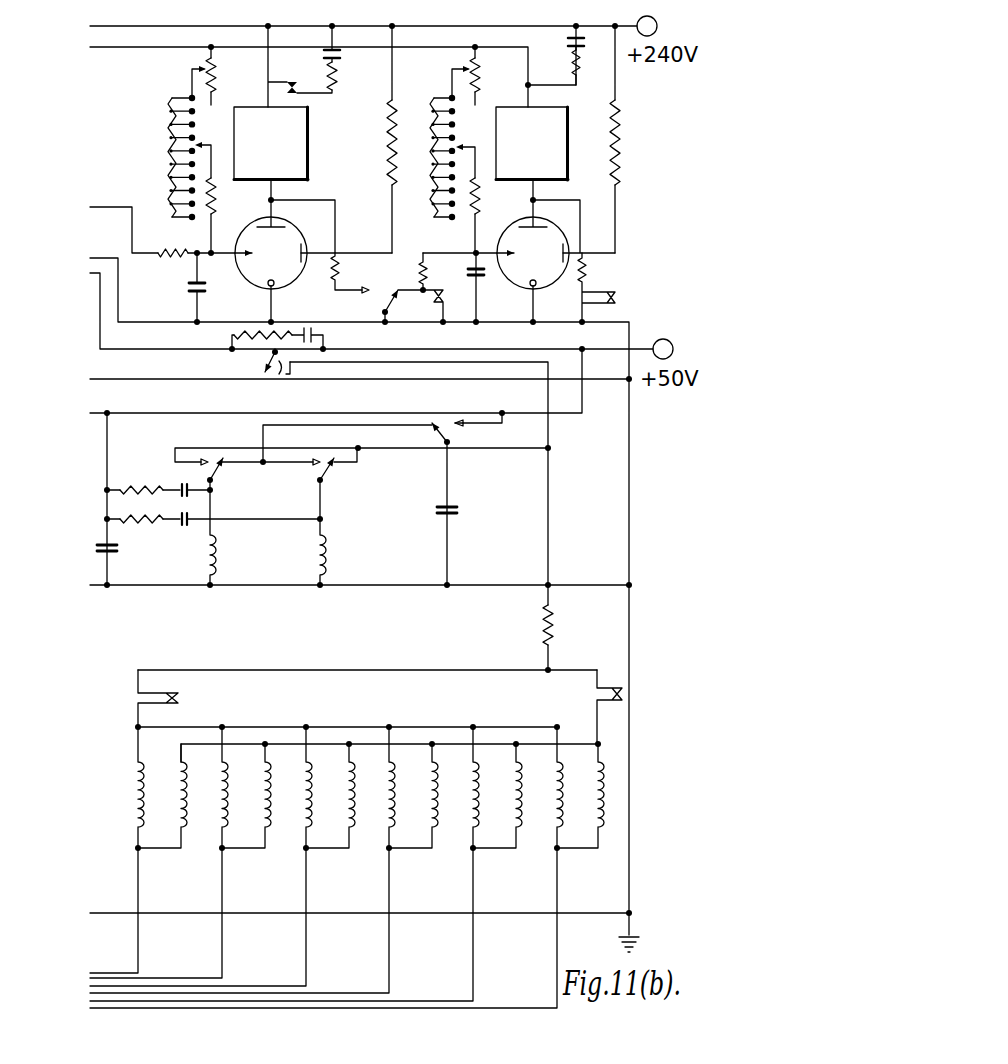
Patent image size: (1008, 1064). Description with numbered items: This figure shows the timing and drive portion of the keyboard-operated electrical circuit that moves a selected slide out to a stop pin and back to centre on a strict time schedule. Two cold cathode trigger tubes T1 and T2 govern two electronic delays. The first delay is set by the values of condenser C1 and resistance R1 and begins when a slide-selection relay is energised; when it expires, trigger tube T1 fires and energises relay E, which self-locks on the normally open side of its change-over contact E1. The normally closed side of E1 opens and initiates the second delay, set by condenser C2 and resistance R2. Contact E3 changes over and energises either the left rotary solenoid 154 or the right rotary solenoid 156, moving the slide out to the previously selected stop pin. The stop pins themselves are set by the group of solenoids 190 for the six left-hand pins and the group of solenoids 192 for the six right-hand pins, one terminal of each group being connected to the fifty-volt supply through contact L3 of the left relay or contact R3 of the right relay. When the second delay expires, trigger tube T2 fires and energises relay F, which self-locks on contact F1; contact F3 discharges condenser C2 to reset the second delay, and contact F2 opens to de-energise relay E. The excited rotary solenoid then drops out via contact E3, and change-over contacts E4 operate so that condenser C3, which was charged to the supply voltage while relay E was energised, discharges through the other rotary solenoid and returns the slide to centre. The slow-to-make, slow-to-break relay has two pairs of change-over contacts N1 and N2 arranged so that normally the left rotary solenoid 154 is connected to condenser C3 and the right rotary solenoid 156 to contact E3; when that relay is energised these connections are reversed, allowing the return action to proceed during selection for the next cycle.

The resistance R1 is at (176, 150).
The resistance R2 is at (459, 150).
The contact of relay R R3 is at (613, 703).
The condenser C1 is at (179, 287).
The condenser C2 is at (468, 272).
The condenser C3 is at (431, 513).
The relay E is at (271, 153).
The relay F is at (532, 153).
The cold cathode trigger tube T1 is at (304, 270).
The cold cathode trigger tube T2 is at (564, 280).
The change-over contact of relay E E1 is at (387, 306).
The normally open contact of relay E E3 is at (282, 374).
The change-over contacts of relay E E4 is at (455, 437).
The contact of relay F F1 is at (611, 287).
The contact of relay F F2 is at (268, 88).
The contact of relay F F3 is at (444, 287).
The change-over contact of relay N N1 is at (226, 474).
The change-over contact of relay N N2 is at (337, 474).
The contact of relay L L3 is at (171, 698).
The left rotary solenoid 154 is at (217, 548).
The right rotary solenoid 156 is at (327, 548).
The group of solenoids actuating the left-hand stop pins 190 is at (146, 778).
The group of solenoids actuating the right-hand stop pins 192 is at (189, 778).